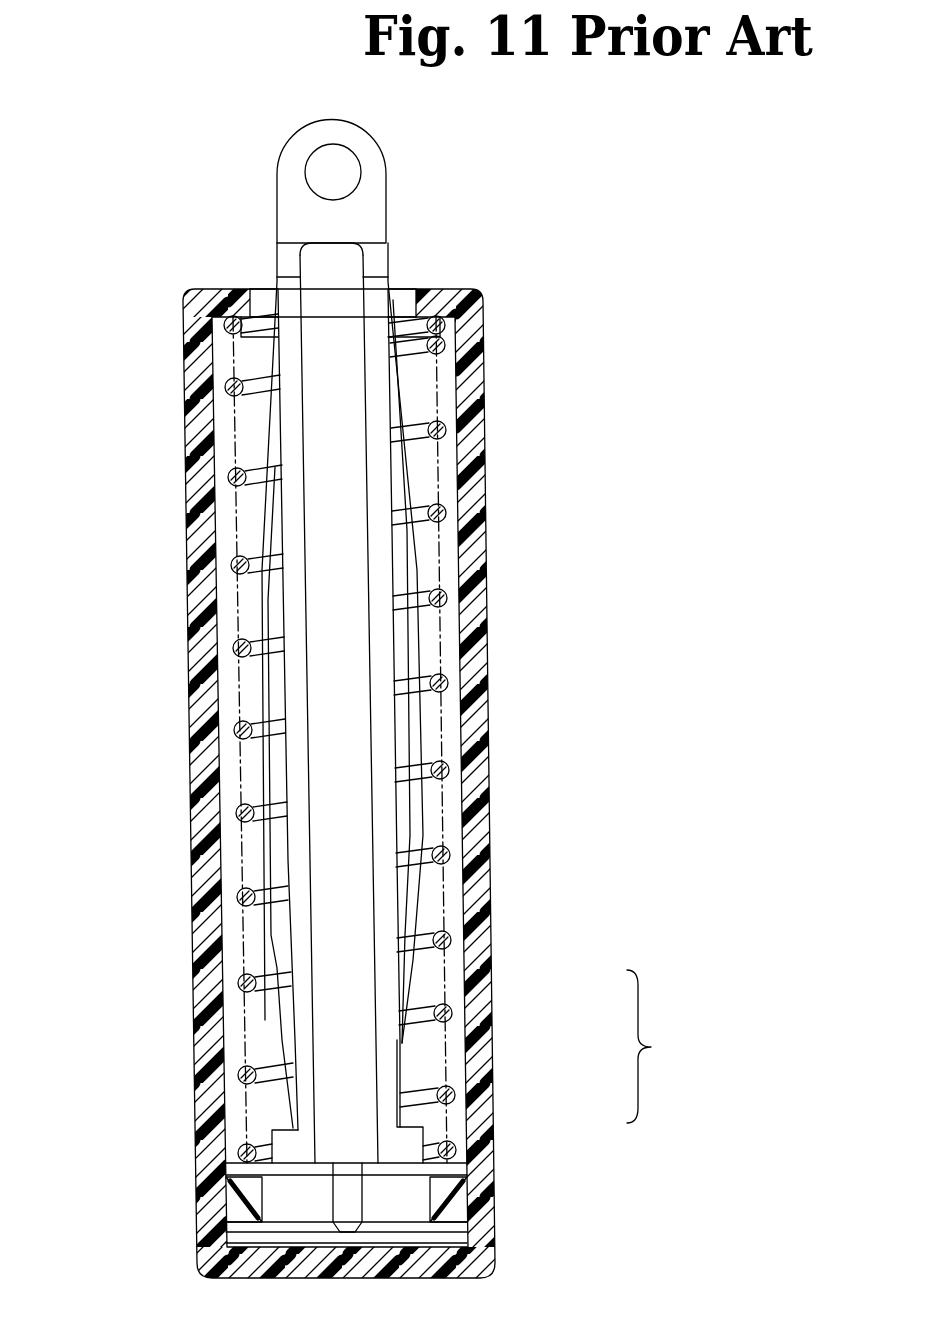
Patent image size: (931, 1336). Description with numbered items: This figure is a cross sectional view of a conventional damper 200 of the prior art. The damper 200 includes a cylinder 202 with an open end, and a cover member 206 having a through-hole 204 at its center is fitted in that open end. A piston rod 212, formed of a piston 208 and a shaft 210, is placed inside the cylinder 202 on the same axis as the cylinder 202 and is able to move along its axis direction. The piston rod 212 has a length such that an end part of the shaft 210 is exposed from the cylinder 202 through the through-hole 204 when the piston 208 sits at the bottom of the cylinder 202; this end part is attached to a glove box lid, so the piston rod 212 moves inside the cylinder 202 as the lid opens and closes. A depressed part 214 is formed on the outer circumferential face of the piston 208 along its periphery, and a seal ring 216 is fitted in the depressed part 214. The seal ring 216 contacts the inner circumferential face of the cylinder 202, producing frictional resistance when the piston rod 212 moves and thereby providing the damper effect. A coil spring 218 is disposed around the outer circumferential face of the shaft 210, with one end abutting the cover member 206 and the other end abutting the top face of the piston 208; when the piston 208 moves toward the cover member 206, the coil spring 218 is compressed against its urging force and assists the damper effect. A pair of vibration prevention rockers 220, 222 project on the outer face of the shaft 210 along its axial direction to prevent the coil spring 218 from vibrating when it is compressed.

The damper 200 is at (535, 228).
The cylinder 202 is at (487, 552).
The through-hole 204 is at (412, 293).
The cover member 206 is at (482, 307).
The piston 208 is at (395, 1190).
The shaft 210 is at (347, 1013).
The piston rod 212 is at (680, 1046).
The depressed part 214 is at (430, 1195).
The seal ring 216 is at (235, 1232).
The coil spring 218 is at (488, 694).
The vibration prevention rocker 220 is at (283, 712).
The vibration prevention rocker 222 is at (415, 645).